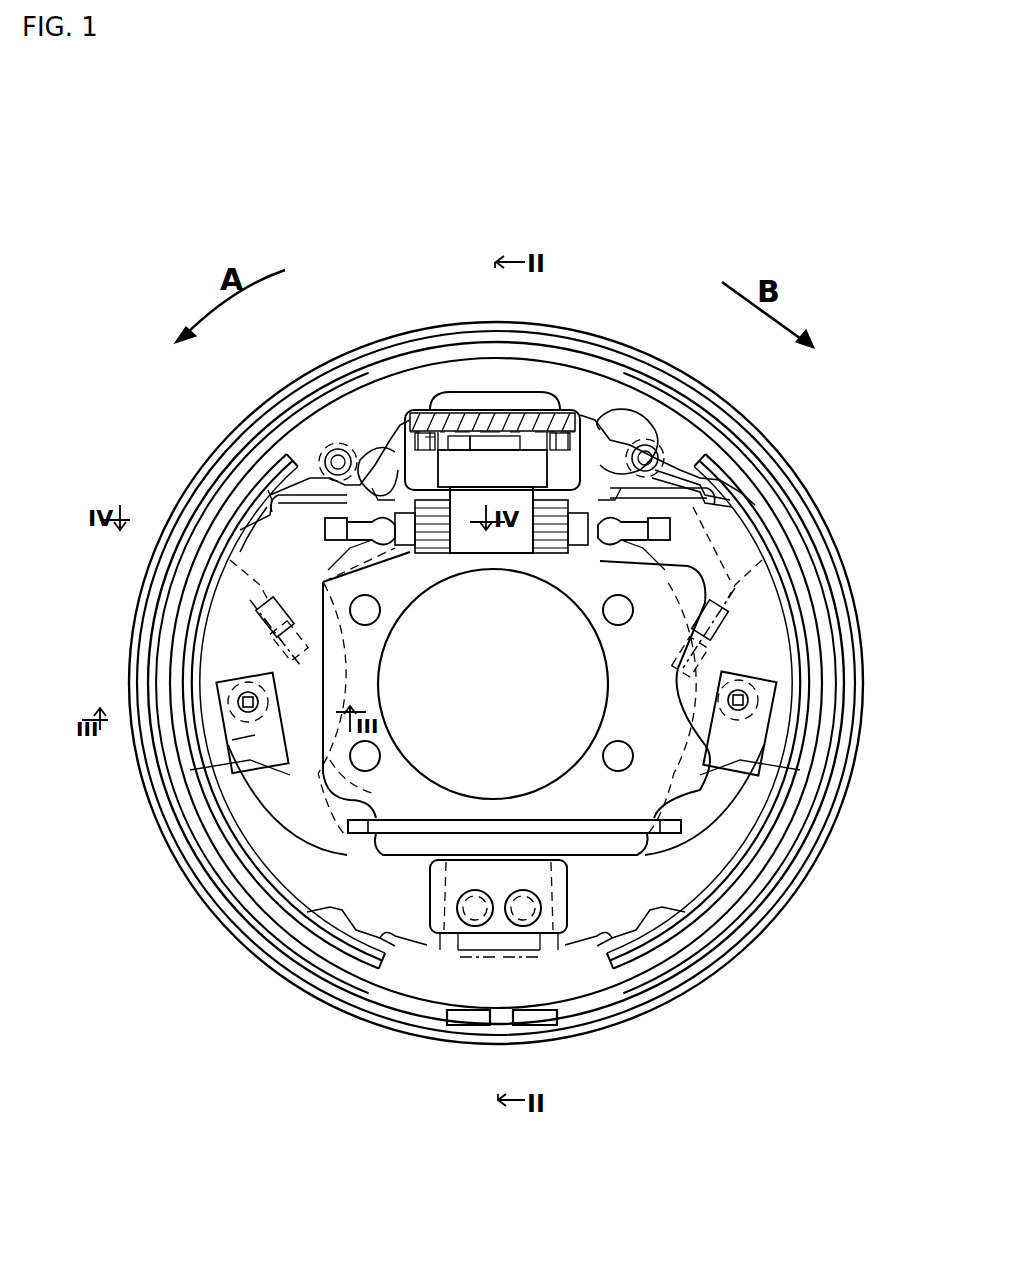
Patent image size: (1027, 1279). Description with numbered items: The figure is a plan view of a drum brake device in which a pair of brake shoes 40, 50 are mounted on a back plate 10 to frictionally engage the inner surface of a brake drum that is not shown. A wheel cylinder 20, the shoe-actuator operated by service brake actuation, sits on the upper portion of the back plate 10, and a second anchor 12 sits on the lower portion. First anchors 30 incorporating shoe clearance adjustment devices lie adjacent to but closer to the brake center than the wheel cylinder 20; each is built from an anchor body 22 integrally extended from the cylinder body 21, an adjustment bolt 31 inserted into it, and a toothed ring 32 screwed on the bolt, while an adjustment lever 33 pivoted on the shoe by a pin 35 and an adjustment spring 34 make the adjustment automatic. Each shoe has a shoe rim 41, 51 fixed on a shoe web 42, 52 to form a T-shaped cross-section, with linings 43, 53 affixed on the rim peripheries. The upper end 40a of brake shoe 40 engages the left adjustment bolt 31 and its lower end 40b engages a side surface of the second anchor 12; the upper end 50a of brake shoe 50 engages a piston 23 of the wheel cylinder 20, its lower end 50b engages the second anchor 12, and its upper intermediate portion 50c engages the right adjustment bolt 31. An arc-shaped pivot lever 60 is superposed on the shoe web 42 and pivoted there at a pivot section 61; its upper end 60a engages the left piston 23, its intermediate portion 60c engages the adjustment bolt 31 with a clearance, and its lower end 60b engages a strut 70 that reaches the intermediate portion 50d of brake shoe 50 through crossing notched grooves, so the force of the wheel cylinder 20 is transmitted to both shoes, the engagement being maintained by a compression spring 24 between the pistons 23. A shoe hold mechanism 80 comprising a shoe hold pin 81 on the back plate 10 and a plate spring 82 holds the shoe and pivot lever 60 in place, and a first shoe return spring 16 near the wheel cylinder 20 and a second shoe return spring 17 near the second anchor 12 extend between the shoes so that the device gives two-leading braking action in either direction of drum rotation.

The back plate 10 is at (642, 345).
The second anchor 12 is at (514, 948).
The first shoe return spring 16 is at (683, 448).
The second shoe return spring 17 is at (460, 940).
The wheel cylinder 20 is at (455, 408).
The cylinder body 21 is at (533, 430).
The anchor body 22 is at (495, 571).
The piston 23 is at (420, 425).
The compression spring 24 is at (488, 430).
The first anchor 30 is at (420, 548).
The adjustment bolt 31 is at (404, 548).
The toothed ring 32 is at (437, 555).
The adjustment lever 33 is at (240, 555).
The adjustment spring 34 is at (262, 608).
The pin 35 is at (330, 445).
The brake shoe 40 is at (262, 478).
The upper end 40a is at (372, 598).
The lower end 40b is at (415, 990).
The shoe rim 41 is at (255, 948).
The shoe web 42 is at (250, 885).
The lining 43 is at (232, 842).
The brake shoe 50 is at (738, 498).
The upper end 50a is at (612, 432).
The lower end 50b is at (585, 995).
The upper intermediate portion 50c is at (628, 623).
The intermediate portion 50d is at (690, 808).
The shoe rim 51 is at (720, 942).
The shoe web 52 is at (742, 883).
The lining 53 is at (768, 840).
The pivot lever 60 is at (360, 720).
The upper end 60a is at (392, 448).
The lower end 60b is at (385, 790).
The intermediate portion 60c is at (358, 625).
The pivot section 61 is at (223, 723).
The strut 70 is at (525, 820).
The shoe hold mechanism 80 is at (238, 748).
The shoe hold pin 81 is at (230, 703).
The plate spring 82 is at (232, 786).